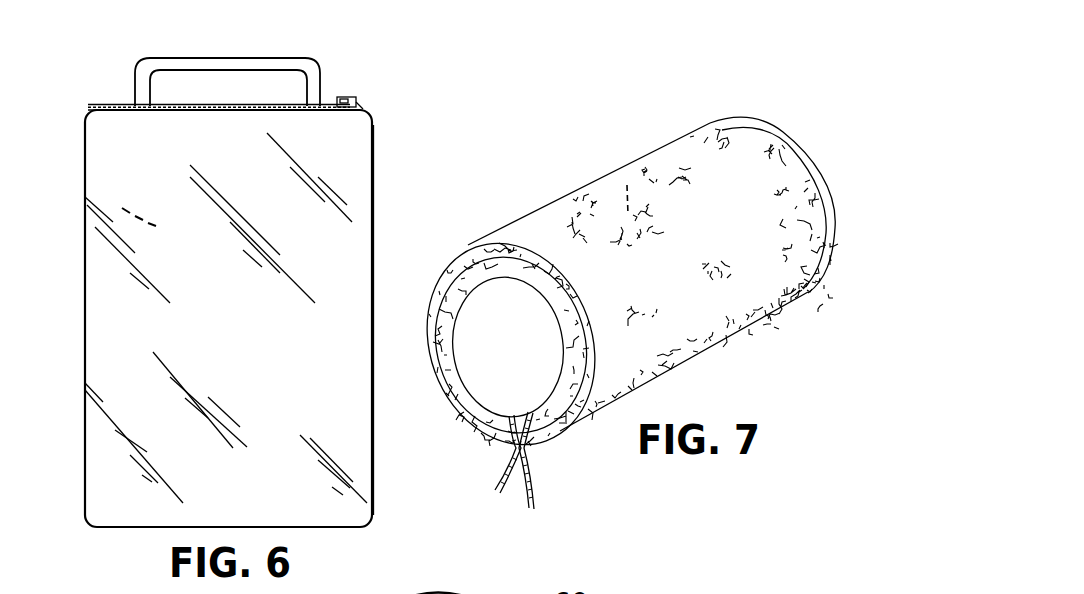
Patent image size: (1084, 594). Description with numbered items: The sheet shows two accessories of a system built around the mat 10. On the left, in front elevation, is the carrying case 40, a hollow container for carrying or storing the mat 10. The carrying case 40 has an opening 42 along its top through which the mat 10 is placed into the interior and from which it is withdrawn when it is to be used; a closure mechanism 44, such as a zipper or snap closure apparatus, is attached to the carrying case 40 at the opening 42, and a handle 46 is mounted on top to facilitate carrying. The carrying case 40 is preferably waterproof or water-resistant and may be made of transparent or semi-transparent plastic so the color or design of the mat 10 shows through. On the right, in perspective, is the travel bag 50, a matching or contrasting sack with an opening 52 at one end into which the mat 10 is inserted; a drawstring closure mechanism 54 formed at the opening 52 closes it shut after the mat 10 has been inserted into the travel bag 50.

In FIG. 6, the mat 10 is at (117, 205).
In FIG. 7, the mat 10 is at (626, 178).
In FIG. 6, the carrying case 40 is at (398, 193).
In FIG. 6, the opening 42 is at (273, 103).
In FIG. 6, the closure mechanism 44 is at (333, 101).
In FIG. 6, the handle 46 is at (219, 62).
In FIG. 7, the travel bag 50 is at (673, 121).
In FIG. 7, the opening 52 is at (495, 368).
In FIG. 7, the drawstring closure mechanism 54 is at (531, 443).